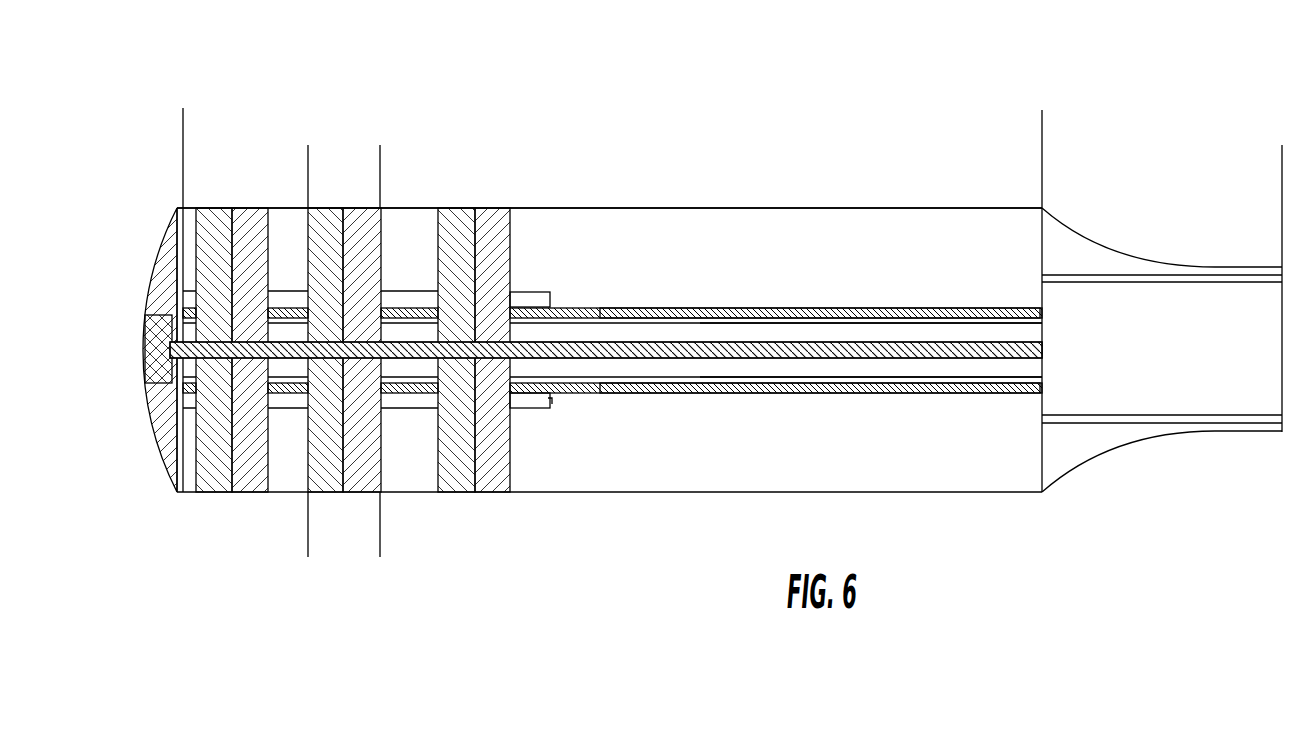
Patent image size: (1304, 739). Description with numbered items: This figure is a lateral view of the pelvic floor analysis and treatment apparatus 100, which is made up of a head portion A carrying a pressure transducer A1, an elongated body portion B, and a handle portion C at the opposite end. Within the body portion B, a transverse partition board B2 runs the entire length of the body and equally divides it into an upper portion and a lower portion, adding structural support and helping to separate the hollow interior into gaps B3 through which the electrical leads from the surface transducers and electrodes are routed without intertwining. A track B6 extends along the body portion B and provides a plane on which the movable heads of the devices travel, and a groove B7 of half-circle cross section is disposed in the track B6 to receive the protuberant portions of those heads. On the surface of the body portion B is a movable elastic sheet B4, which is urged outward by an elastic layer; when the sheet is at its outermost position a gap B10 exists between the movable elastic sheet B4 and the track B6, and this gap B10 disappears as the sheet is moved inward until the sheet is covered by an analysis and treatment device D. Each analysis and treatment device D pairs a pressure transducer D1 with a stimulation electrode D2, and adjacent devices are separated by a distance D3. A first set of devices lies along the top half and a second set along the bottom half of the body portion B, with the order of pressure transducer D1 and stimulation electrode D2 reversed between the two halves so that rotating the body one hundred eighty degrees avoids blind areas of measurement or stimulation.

The pelvic floor analysis and treatment apparatus 100 is at (262, 110).
The head portion A is at (158, 439).
The pressure transducer A1 is at (157, 352).
The body portion B is at (1042, 128).
The transverse partition board B2 is at (892, 358).
The gap B3 is at (922, 332).
The movable elastic sheet B4 is at (190, 207).
The track B6 is at (771, 318).
The groove B7 is at (614, 322).
The gap B10 is at (548, 400).
The handle portion C is at (1282, 182).
The analysis and treatment device D is at (380, 185).
The pressure transducer D1 is at (458, 207).
The stimulation electrode D2 is at (493, 207).
The distance D3 is at (290, 207).